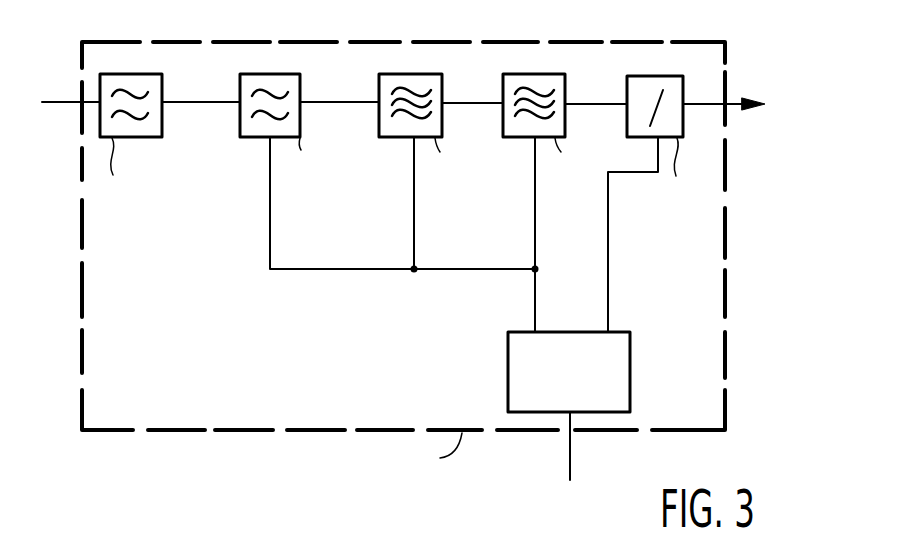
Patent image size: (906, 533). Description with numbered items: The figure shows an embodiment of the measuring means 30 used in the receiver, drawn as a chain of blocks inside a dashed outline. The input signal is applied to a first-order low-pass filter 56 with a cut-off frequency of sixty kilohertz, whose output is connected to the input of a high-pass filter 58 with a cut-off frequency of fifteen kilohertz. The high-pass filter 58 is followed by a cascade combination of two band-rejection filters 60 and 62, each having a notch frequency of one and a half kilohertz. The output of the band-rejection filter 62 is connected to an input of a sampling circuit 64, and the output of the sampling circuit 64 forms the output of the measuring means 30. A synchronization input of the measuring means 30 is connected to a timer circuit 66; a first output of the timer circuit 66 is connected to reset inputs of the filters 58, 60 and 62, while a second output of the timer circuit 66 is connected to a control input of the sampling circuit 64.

The measuring means 30 is at (184, 40).
The low-pass filter 56 is at (118, 138).
The high-pass filter 58 is at (263, 138).
The band-rejection filter 60 is at (400, 138).
The band-rejection filter 62 is at (523, 138).
The sampling circuit 64 is at (638, 140).
The timer circuit 66 is at (616, 345).